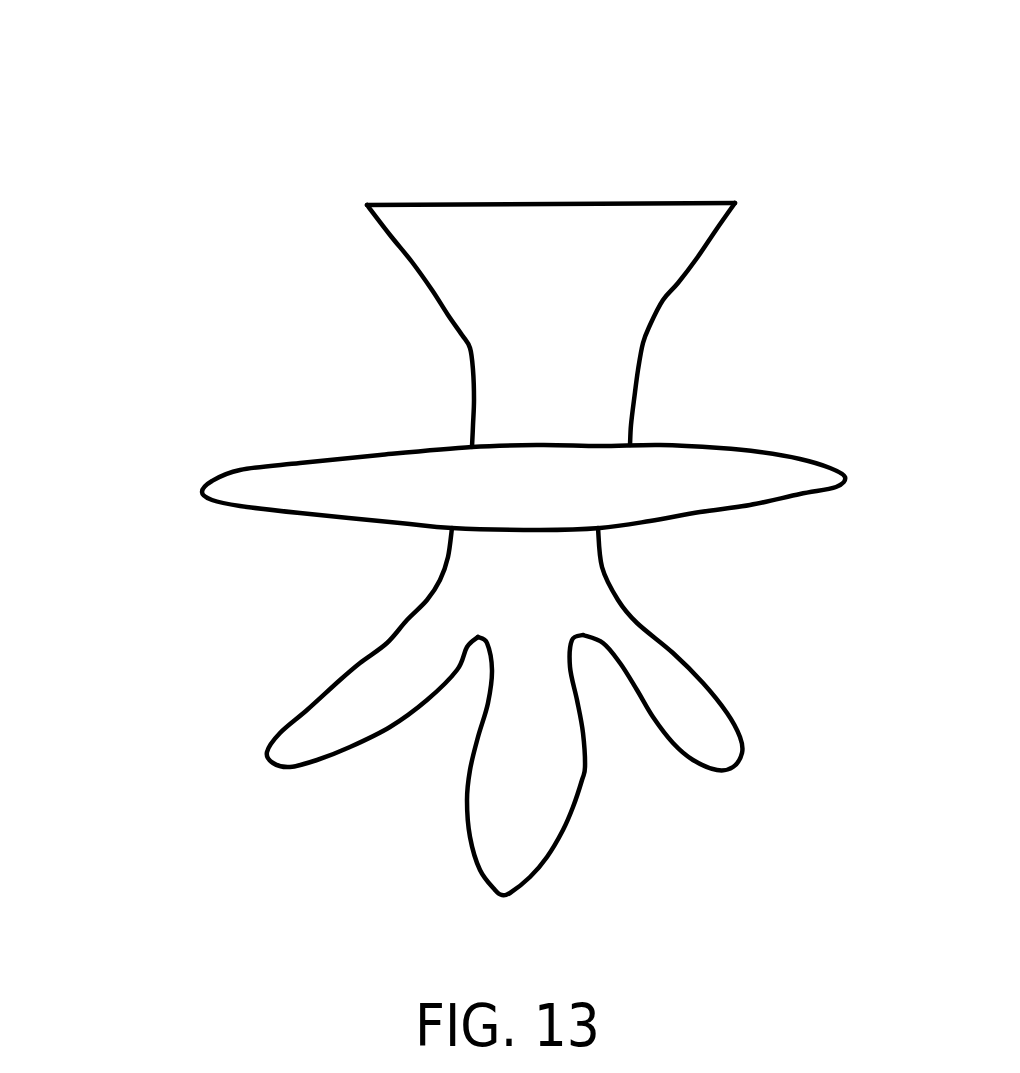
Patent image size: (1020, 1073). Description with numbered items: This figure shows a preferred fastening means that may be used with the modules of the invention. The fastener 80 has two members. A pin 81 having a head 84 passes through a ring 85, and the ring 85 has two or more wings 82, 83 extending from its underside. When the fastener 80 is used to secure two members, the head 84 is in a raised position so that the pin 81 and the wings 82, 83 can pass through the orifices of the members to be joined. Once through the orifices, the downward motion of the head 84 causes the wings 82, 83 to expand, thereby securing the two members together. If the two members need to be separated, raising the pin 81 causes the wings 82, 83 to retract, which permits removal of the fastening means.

The fastener 80 is at (365, 204).
The pin 81 is at (532, 875).
The wing 82 is at (285, 768).
The wing 83 is at (742, 766).
The head 84 is at (748, 201).
The ring 85 is at (198, 489).